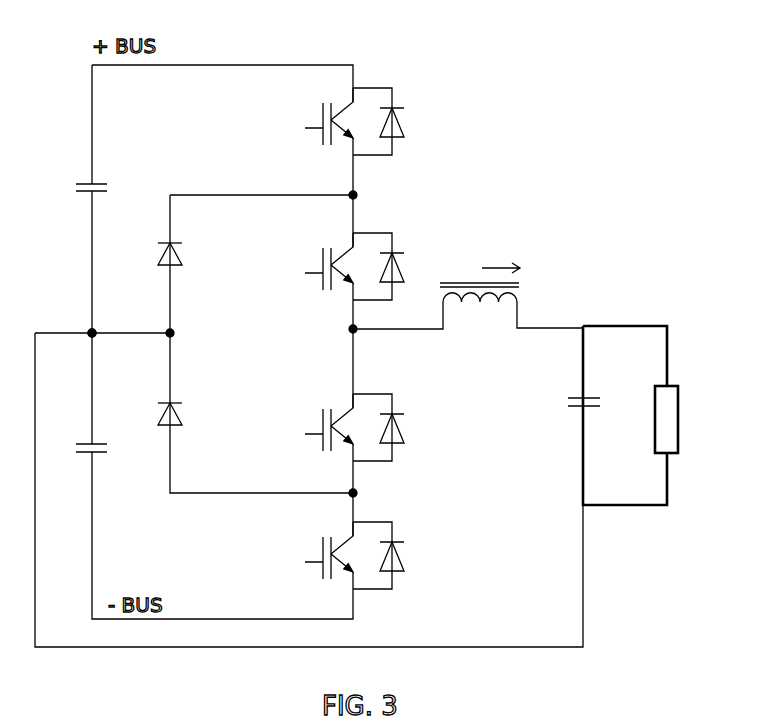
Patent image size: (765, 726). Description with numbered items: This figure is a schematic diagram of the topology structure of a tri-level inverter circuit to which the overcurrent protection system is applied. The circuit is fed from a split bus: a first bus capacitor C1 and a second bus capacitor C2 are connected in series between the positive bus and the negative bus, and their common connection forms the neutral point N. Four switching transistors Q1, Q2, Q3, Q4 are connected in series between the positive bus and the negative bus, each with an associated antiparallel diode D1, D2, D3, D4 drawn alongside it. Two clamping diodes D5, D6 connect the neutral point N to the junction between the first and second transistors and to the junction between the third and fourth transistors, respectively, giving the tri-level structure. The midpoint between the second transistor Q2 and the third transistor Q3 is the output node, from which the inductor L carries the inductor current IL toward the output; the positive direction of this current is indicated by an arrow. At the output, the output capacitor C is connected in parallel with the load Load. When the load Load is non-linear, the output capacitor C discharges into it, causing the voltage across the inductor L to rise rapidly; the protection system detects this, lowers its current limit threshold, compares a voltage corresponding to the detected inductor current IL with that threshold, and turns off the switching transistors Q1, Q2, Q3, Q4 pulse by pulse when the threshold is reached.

The upper bus capacitor C1 is at (78, 172).
The lower bus capacitor C2 is at (74, 462).
The neutral node N is at (73, 315).
The clamping diode D5 is at (149, 255).
The clamping diode D6 is at (149, 416).
The switching transistor Q1 is at (310, 116).
The switching transistor Q2 is at (310, 261).
The switching transistor Q3 is at (310, 422).
The switching transistor Q4 is at (310, 550).
The freewheeling diode D1 is at (400, 121).
The freewheeling diode D2 is at (400, 266).
The freewheeling diode D3 is at (400, 427).
The freewheeling diode D4 is at (400, 555).
The inductor L is at (479, 309).
The inductor current detection value IL is at (546, 262).
The output capacitor C is at (572, 405).
The load Load is at (630, 415).